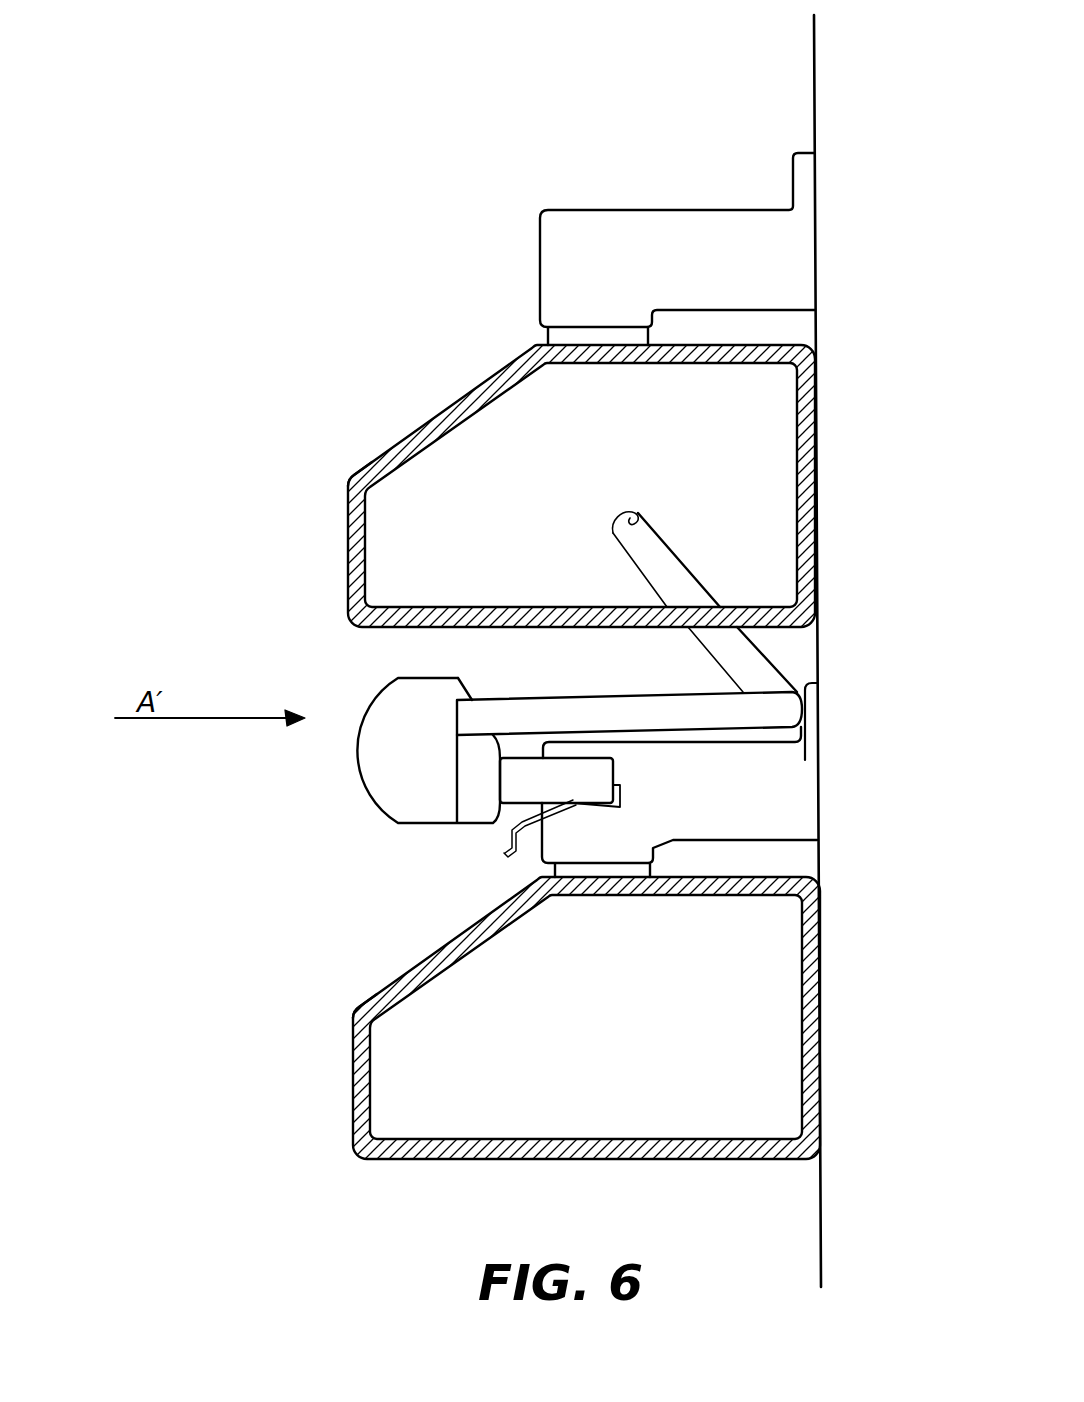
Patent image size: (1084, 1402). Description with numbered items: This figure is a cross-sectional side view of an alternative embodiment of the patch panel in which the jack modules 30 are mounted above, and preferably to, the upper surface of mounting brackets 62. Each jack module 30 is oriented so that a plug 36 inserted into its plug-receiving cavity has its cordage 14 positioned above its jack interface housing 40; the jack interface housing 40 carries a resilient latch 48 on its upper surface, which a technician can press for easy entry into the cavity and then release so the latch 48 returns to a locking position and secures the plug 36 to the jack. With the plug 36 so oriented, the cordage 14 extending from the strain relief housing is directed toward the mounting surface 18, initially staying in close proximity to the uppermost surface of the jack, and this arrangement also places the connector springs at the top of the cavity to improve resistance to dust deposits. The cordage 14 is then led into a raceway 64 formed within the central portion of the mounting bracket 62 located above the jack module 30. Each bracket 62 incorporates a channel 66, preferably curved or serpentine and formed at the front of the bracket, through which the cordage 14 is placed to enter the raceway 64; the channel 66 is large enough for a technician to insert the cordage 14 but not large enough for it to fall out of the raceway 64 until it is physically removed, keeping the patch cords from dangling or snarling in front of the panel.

The cordage 14 is at (517, 710).
The mounting surface 18 is at (821, 1207).
The jack module 30 is at (568, 268).
The plug 36 is at (330, 773).
The jack interface housing 40 is at (472, 808).
The resilient latch 48 is at (522, 833).
The mounting bracket 62 is at (418, 425).
The raceway 64 is at (447, 553).
The channel 66 is at (373, 467).